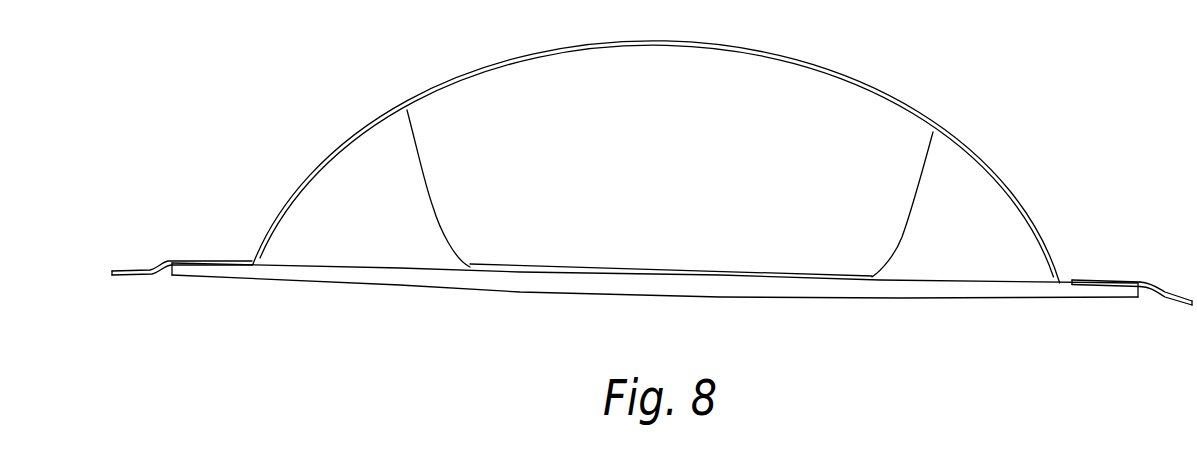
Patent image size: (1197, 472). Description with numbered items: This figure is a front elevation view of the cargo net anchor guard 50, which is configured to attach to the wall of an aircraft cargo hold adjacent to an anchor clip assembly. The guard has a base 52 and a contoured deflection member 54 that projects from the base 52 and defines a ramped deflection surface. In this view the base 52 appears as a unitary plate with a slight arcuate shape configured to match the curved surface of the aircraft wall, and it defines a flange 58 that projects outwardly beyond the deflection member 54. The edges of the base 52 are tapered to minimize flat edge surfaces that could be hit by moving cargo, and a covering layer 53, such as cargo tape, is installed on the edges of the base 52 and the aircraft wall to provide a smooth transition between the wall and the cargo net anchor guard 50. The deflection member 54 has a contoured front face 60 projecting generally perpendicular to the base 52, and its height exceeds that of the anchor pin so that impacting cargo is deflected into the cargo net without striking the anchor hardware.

The cargo net anchor guard 50 is at (649, 215).
The base 52 is at (218, 270).
The covering layer 53 is at (150, 268).
The deflection member 54 is at (942, 120).
The flange 58 is at (1098, 283).
The front face 60 is at (967, 250).